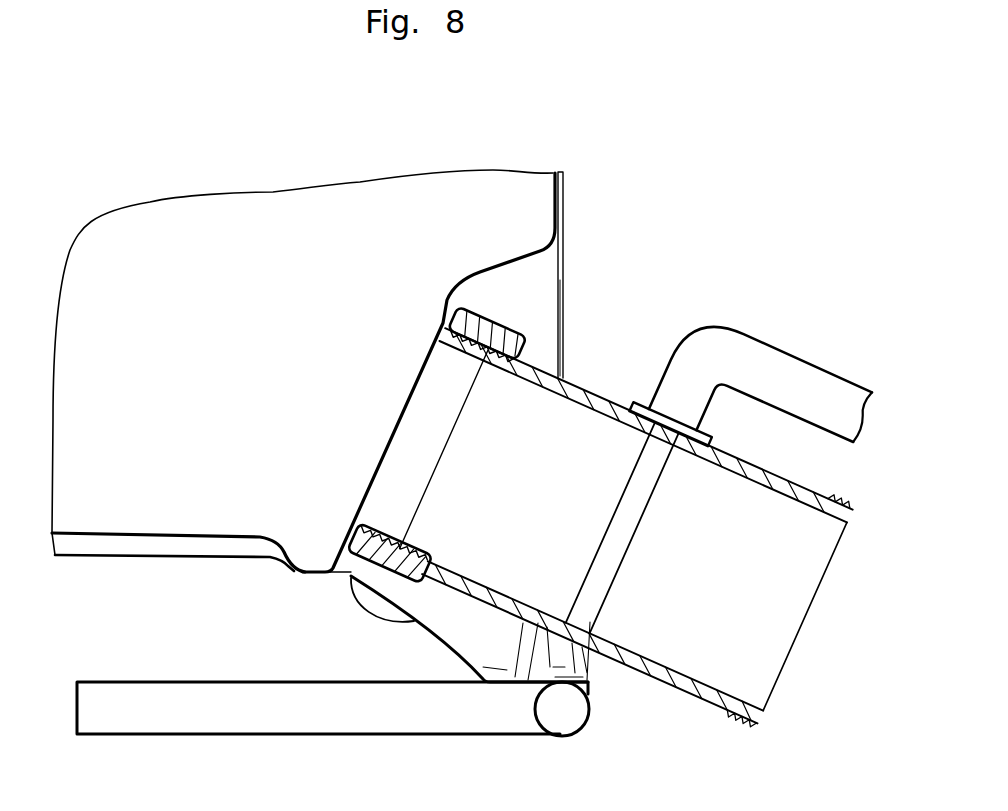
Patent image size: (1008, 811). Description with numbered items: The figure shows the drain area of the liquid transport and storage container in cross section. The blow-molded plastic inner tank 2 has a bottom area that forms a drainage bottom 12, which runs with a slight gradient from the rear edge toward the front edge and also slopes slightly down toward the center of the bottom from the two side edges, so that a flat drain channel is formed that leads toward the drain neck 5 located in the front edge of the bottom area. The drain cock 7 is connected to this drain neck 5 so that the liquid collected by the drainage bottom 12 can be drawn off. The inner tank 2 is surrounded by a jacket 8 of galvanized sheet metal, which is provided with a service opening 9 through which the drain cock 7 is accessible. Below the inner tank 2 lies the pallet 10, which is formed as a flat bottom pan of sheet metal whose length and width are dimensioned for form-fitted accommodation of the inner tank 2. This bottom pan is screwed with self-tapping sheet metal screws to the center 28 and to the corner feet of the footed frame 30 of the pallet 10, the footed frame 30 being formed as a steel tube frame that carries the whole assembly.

The plastic inner tank 2 is at (405, 227).
The drain neck 5 is at (412, 418).
The drain cock 7 is at (773, 358).
The jacket 8 is at (560, 190).
The service opening 9 is at (563, 273).
The pallet 10 is at (224, 746).
The drainage bottom 12 is at (150, 533).
The center 28 is at (339, 574).
The footed frame 30 is at (472, 727).